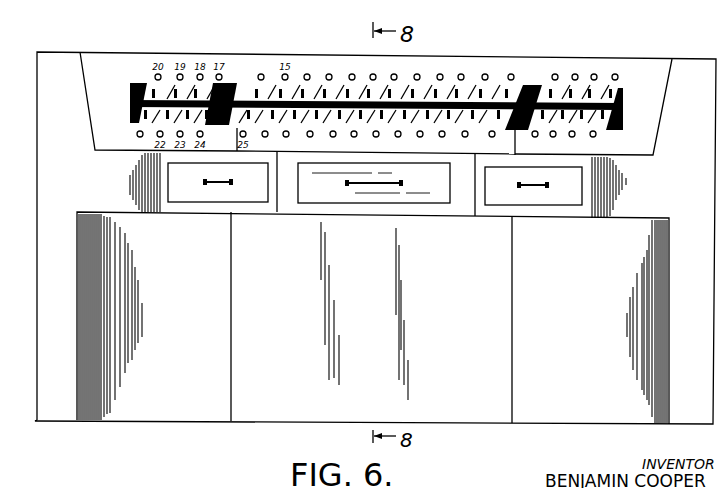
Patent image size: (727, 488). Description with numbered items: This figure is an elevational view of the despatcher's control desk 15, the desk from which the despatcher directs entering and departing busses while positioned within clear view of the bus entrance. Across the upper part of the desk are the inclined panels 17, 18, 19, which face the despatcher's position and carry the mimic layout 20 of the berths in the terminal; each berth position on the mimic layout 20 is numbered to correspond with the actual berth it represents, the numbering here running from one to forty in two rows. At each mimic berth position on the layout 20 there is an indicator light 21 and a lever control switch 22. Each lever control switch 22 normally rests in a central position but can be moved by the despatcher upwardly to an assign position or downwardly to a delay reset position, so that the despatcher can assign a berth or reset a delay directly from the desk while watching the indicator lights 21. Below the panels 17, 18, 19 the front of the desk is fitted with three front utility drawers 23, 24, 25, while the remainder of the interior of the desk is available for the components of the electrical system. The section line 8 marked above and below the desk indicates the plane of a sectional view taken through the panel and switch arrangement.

The despatcher's control desk 15 is at (640, 33).
The inclined panel 17 is at (131, 63).
The inclined panel 18 is at (245, 62).
The inclined panel 19 is at (538, 68).
The mimic layout 20 is at (130, 89).
The indicator light 21 is at (307, 76).
The lever control switch 22 is at (438, 92).
The front utility drawer 23 is at (203, 193).
The front utility drawer 24 is at (353, 200).
The front utility drawer 25 is at (508, 200).
The section line 8 is at (440, 71).